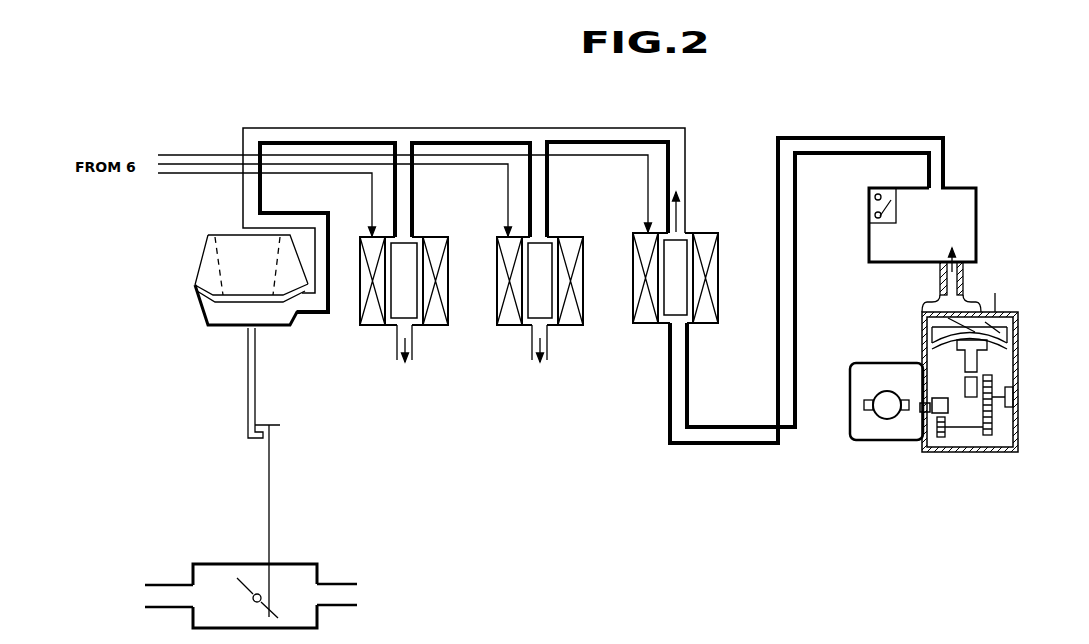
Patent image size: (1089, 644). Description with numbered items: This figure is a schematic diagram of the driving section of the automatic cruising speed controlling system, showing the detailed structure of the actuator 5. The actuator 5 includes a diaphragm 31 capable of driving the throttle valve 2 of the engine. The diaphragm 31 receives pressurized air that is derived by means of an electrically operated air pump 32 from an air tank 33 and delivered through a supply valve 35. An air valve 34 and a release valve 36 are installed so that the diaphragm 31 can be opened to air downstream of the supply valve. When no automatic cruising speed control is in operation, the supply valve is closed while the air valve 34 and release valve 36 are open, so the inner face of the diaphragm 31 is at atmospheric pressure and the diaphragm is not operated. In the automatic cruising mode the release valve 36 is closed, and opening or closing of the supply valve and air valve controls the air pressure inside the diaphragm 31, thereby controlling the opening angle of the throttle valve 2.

The actuator 5 is at (352, 110).
The diaphragm 31 is at (198, 271).
The release valve 36 is at (361, 336).
The supply valve 35 is at (511, 333).
The air valve 34 is at (650, 332).
The air tank 33 is at (978, 226).
The electrically operated air pump 32 is at (1020, 352).
The throttle valve 2 is at (247, 587).